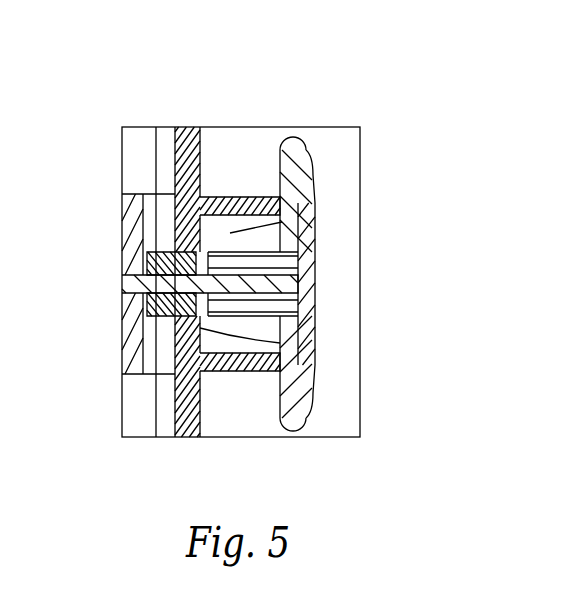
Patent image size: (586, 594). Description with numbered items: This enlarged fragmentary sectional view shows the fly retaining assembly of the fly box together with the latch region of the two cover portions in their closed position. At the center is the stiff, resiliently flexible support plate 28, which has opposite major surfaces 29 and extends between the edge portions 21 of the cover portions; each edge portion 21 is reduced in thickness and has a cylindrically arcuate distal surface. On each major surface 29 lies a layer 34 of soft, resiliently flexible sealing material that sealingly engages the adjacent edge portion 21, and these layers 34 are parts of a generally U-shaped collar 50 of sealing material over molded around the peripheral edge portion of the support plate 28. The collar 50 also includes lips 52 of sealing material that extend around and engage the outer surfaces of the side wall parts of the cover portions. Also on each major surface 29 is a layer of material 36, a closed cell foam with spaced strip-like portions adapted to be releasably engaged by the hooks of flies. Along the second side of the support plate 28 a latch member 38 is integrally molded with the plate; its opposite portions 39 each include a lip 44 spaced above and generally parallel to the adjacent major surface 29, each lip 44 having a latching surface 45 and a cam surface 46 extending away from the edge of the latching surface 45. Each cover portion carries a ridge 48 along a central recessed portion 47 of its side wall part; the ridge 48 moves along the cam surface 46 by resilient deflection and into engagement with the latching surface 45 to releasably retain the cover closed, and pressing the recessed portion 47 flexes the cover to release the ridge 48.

The edge portion 21 is at (315, 311).
The support plate 28 is at (128, 290).
The major surfaces 29 is at (150, 262).
The layer of sealing material 34 is at (176, 250).
The layer of material 36 is at (132, 216).
The latch member 38 is at (315, 284).
The opposite portions 39 is at (303, 198).
The lip 44 is at (282, 190).
The latching surface 45 is at (268, 205).
The cam surface 46 is at (278, 180).
The central recessed portions 47 is at (203, 133).
The ridge 48 is at (313, 165).
The U-shaped collar 50 is at (158, 256).
The lips 52 is at (315, 223).